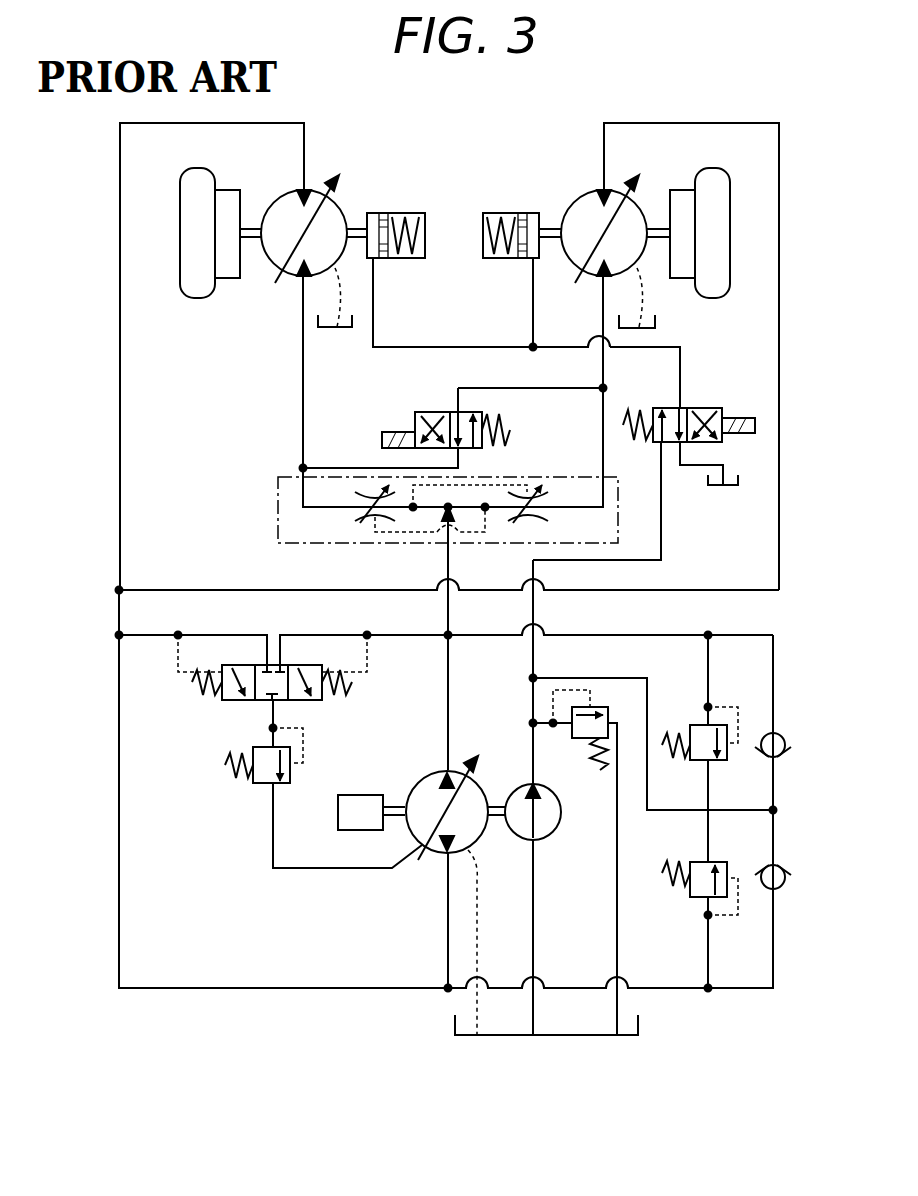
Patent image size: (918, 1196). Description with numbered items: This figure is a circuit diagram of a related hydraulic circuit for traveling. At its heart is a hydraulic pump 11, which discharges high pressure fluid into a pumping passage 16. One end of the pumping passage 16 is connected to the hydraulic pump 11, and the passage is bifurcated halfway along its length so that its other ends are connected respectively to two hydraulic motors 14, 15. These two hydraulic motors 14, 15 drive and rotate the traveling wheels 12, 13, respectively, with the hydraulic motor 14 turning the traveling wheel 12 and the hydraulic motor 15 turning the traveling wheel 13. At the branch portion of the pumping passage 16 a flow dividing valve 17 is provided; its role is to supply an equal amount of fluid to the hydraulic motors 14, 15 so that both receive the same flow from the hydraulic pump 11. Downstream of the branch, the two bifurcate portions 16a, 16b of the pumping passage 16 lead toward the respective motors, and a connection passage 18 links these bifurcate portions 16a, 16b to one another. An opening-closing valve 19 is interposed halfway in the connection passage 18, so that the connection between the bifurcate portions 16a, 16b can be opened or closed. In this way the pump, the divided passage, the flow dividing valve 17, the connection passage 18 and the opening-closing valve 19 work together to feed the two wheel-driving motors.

The hydraulic pump 11 is at (412, 790).
The traveling wheel 12 is at (195, 168).
The traveling wheel 13 is at (716, 168).
The hydraulic motor 14 is at (284, 200).
The hydraulic motor 15 is at (578, 200).
The pumping passage 16 is at (448, 566).
The bifurcate portion 16a is at (302, 370).
The bifurcate portion 16b is at (602, 372).
The flow dividing valve 17 is at (278, 490).
The connection passage 18 is at (533, 390).
The opening-closing valve 19 is at (432, 412).